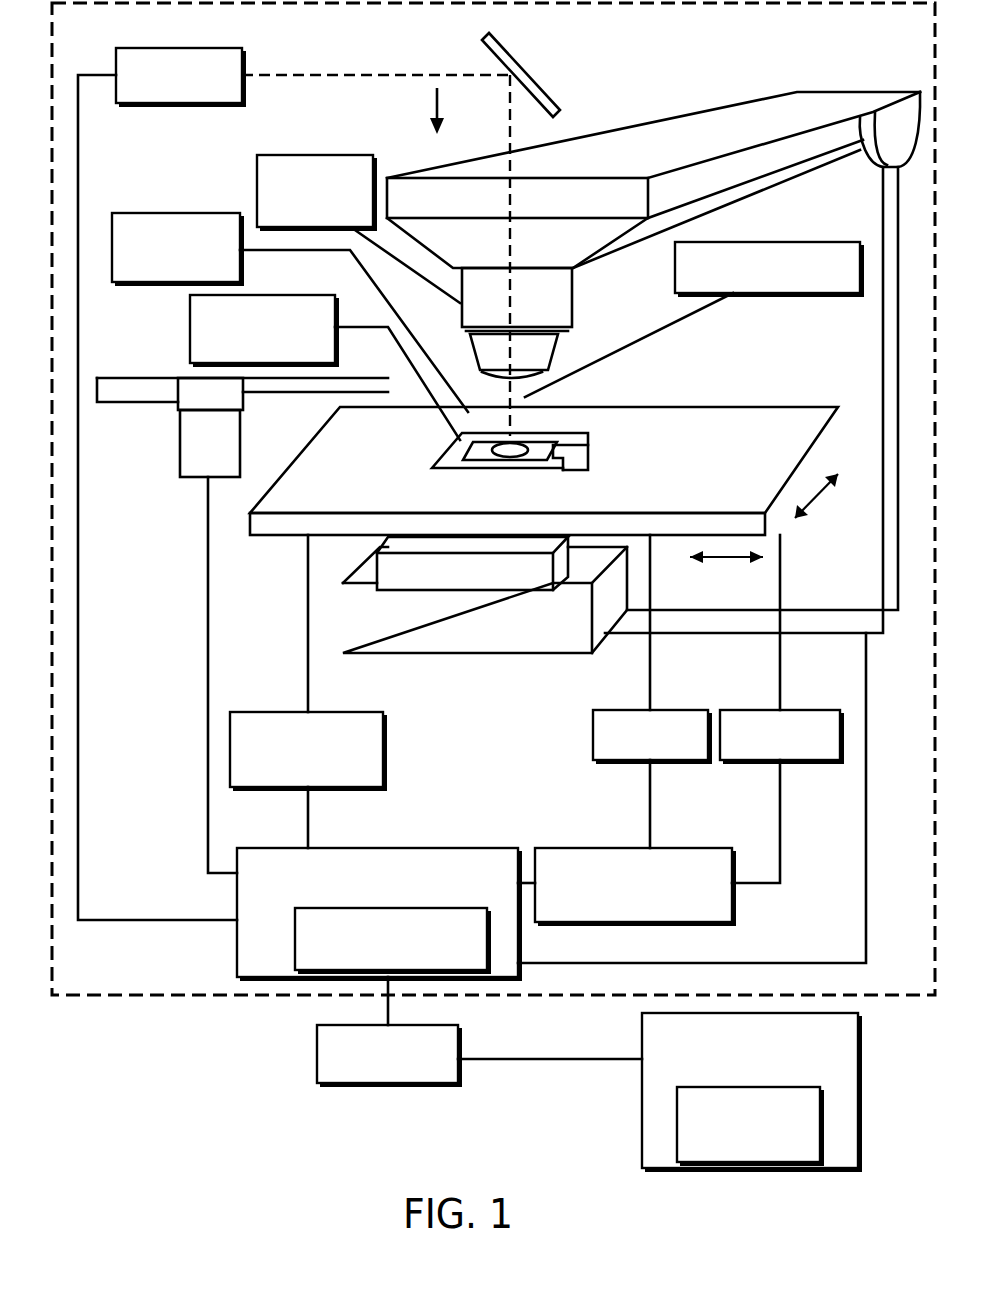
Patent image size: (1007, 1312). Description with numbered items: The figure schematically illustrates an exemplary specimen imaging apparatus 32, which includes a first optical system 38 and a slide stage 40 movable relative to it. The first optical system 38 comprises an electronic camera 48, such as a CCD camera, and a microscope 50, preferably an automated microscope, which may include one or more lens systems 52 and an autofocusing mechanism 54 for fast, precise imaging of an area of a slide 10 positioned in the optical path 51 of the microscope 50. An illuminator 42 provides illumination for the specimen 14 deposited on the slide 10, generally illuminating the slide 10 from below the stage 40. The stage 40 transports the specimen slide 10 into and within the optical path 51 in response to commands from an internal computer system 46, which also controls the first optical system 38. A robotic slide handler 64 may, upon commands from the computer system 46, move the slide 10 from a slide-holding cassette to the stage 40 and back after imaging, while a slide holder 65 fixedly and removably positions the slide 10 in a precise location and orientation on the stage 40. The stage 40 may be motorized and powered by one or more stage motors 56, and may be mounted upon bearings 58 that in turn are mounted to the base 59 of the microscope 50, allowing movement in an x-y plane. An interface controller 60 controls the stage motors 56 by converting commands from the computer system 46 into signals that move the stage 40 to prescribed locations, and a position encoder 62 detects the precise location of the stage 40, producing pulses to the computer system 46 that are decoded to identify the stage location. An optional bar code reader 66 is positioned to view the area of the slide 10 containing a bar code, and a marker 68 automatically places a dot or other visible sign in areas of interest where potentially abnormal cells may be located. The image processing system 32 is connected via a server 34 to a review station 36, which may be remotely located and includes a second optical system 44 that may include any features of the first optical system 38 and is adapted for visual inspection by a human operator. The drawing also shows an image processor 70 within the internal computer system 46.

The slide 10 is at (535, 445).
The specimen 14 is at (497, 462).
The specimen imaging apparatus 32 is at (176, 998).
The server 34 is at (365, 1085).
The review station 36 is at (843, 1062).
The first optical system 38 is at (556, 62).
The slide stage 40 is at (815, 440).
The illuminator 42 is at (786, 296).
The second optical system 44 is at (748, 1165).
The internal computer system 46 is at (466, 848).
The electronic camera 48 is at (140, 48).
The microscope 50 is at (850, 92).
The optical path 51 is at (510, 106).
The lens system 52 is at (563, 297).
The autofocusing mechanism 54 is at (318, 155).
The stage motor 56 is at (681, 763).
The bearings 58 is at (377, 567).
The base 59 is at (462, 633).
The interface controller 60 is at (647, 925).
The position encoder 62 is at (385, 752).
The robotic slide handler 64 is at (185, 447).
The slide holder 65 is at (537, 458).
The bar code reader 66 is at (190, 326).
The marker 68 is at (170, 213).
The image processor 70 is at (296, 947).